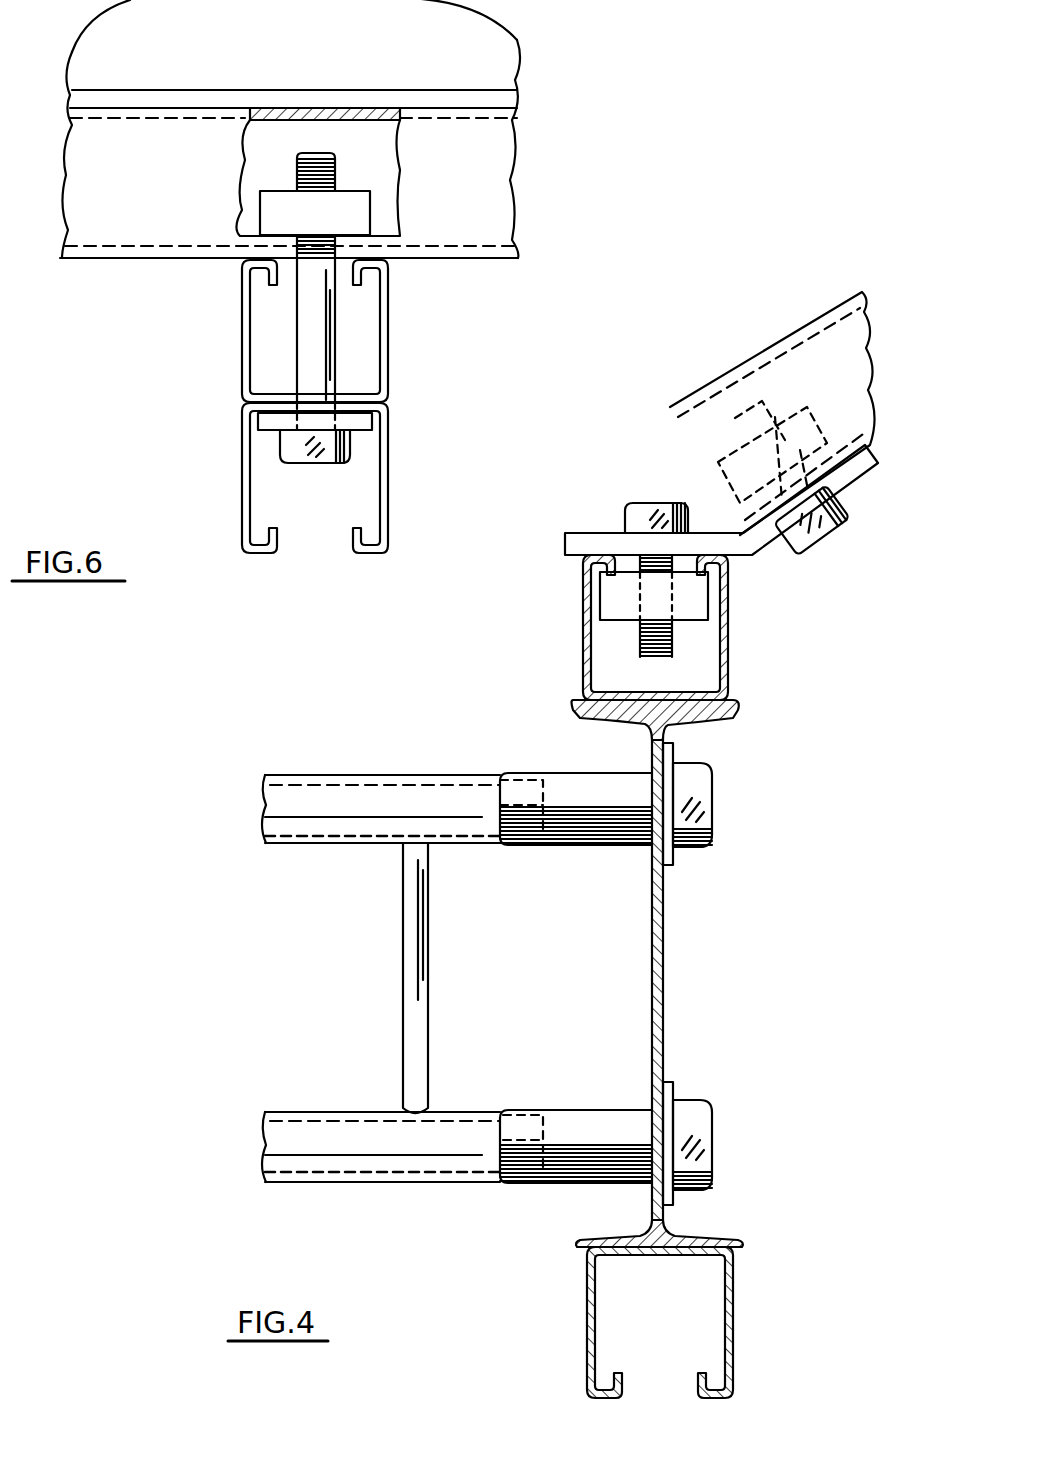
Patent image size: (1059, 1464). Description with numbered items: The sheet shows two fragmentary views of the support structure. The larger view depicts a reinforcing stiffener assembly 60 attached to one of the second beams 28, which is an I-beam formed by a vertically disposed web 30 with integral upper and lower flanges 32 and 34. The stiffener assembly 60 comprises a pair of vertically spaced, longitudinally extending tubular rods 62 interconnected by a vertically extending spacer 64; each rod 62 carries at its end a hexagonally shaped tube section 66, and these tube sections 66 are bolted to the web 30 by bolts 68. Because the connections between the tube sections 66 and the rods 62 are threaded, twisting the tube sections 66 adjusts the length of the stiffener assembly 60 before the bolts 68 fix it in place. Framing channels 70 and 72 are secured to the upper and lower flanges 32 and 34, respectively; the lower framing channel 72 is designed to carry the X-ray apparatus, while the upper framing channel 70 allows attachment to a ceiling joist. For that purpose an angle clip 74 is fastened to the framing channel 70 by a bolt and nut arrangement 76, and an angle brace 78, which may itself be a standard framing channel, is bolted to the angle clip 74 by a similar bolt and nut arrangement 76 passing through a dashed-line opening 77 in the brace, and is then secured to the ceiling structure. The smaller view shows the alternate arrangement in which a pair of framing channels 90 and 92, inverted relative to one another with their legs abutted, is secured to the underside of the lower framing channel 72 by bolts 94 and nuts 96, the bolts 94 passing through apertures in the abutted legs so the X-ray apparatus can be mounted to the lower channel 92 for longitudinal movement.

In FIG. 6, the second beam 28 is at (540, 40).
In FIG. 4, the second beam 28 is at (682, 973).
In FIG. 6, the web 30 is at (272, 20).
In FIG. 4, the web 30 is at (665, 930).
In FIG. 4, the upper flange 32 is at (712, 717).
In FIG. 6, the lower flange 34 is at (134, 89).
In FIG. 4, the lower flange 34 is at (700, 1225).
In FIG. 4, the stiffener assembly 60 is at (457, 929).
In FIG. 4, the tubular rod 62 is at (305, 778).
In FIG. 4, the spacer 64 is at (425, 910).
In FIG. 4, the hexagonally shaped tube section 66 is at (595, 795).
In FIG. 4, the bolt 68 is at (712, 797).
In FIG. 4, the framing channel 70 is at (728, 600).
In FIG. 6, the framing channel 72 is at (493, 158).
In FIG. 4, the framing channel 72 is at (733, 1297).
In FIG. 4, the angle clip 74 is at (590, 540).
In FIG. 4, the bolt and nut arrangement 76 is at (652, 502).
In FIG. 4, the slot 77 is at (780, 405).
In FIG. 4, the angle brace 78 is at (815, 340).
In FIG. 6, the framing channel 90 is at (243, 308).
In FIG. 6, the framing channel 92 is at (390, 450).
In FIG. 6, the bolt 94 is at (318, 464).
In FIG. 6, the nut 96 is at (275, 205).